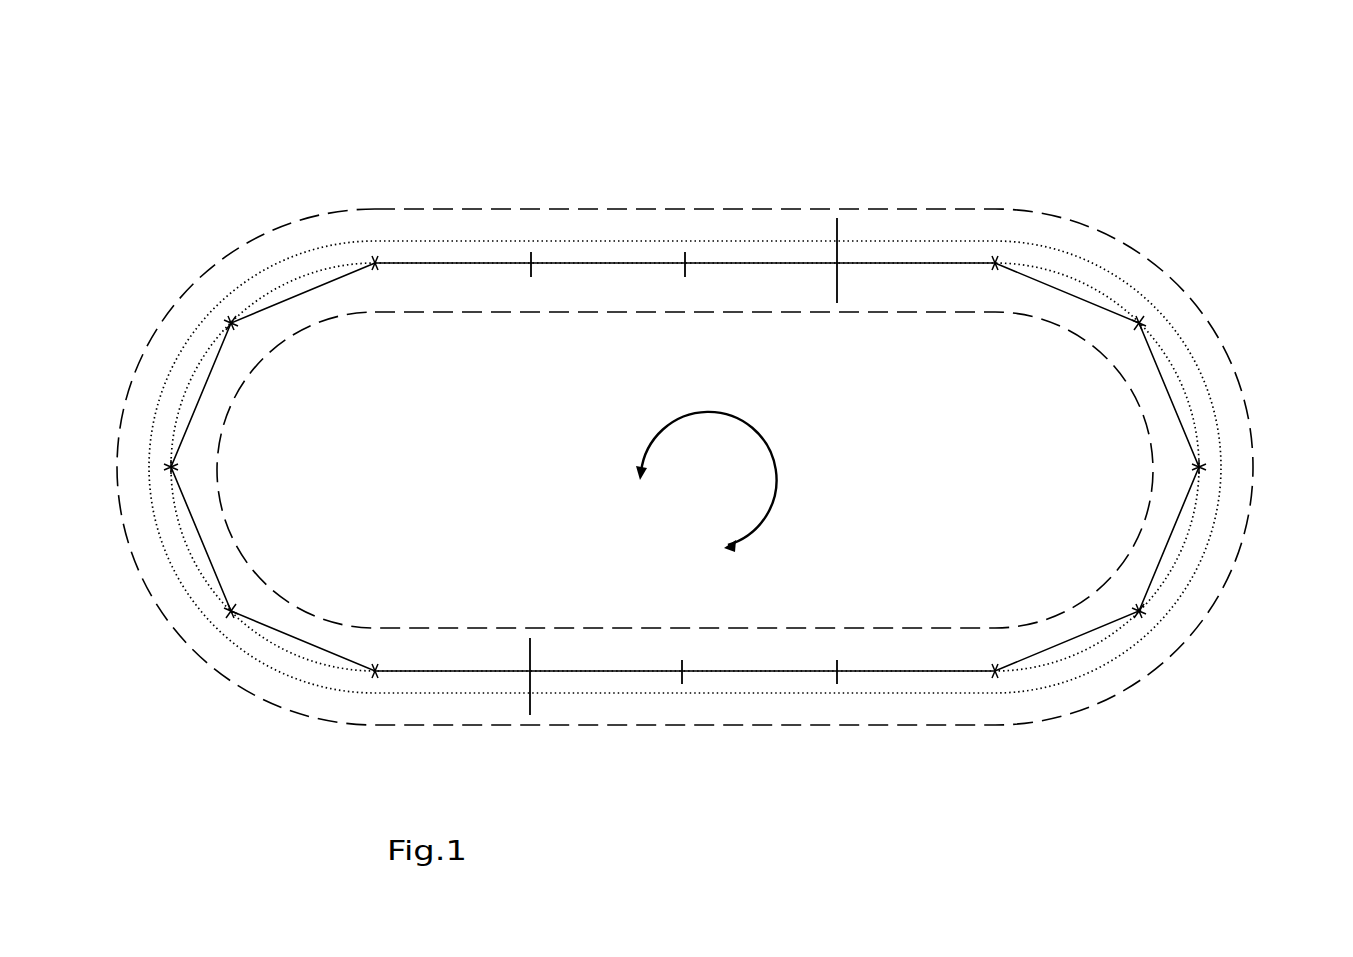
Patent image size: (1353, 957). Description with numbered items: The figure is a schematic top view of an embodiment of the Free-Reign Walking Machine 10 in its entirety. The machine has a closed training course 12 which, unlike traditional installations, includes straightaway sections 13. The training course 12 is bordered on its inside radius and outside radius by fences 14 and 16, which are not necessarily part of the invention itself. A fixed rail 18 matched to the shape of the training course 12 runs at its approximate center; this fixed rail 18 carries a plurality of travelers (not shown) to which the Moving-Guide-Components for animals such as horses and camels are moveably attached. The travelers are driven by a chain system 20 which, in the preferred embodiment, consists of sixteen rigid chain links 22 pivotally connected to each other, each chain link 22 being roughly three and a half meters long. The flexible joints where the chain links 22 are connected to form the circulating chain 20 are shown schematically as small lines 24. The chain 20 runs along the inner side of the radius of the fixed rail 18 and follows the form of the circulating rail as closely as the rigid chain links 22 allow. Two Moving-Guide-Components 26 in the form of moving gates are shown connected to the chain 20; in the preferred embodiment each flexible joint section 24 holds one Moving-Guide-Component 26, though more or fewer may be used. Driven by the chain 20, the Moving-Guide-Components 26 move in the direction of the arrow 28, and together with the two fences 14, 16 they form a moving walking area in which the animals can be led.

The Free-Reign Walking Machine 10 is at (1155, 107).
The training course 12 is at (492, 226).
The straightaway sections 13 is at (752, 198).
The fence 14 is at (630, 207).
The fence 16 is at (422, 313).
The fixed rail 18 is at (321, 263).
The chain system 20 is at (890, 275).
The chain link 22 is at (1170, 392).
The flexible joint 24 is at (1139, 328).
The Moving-Guide-Component 26 is at (837, 240).
The arrow 28 is at (772, 511).